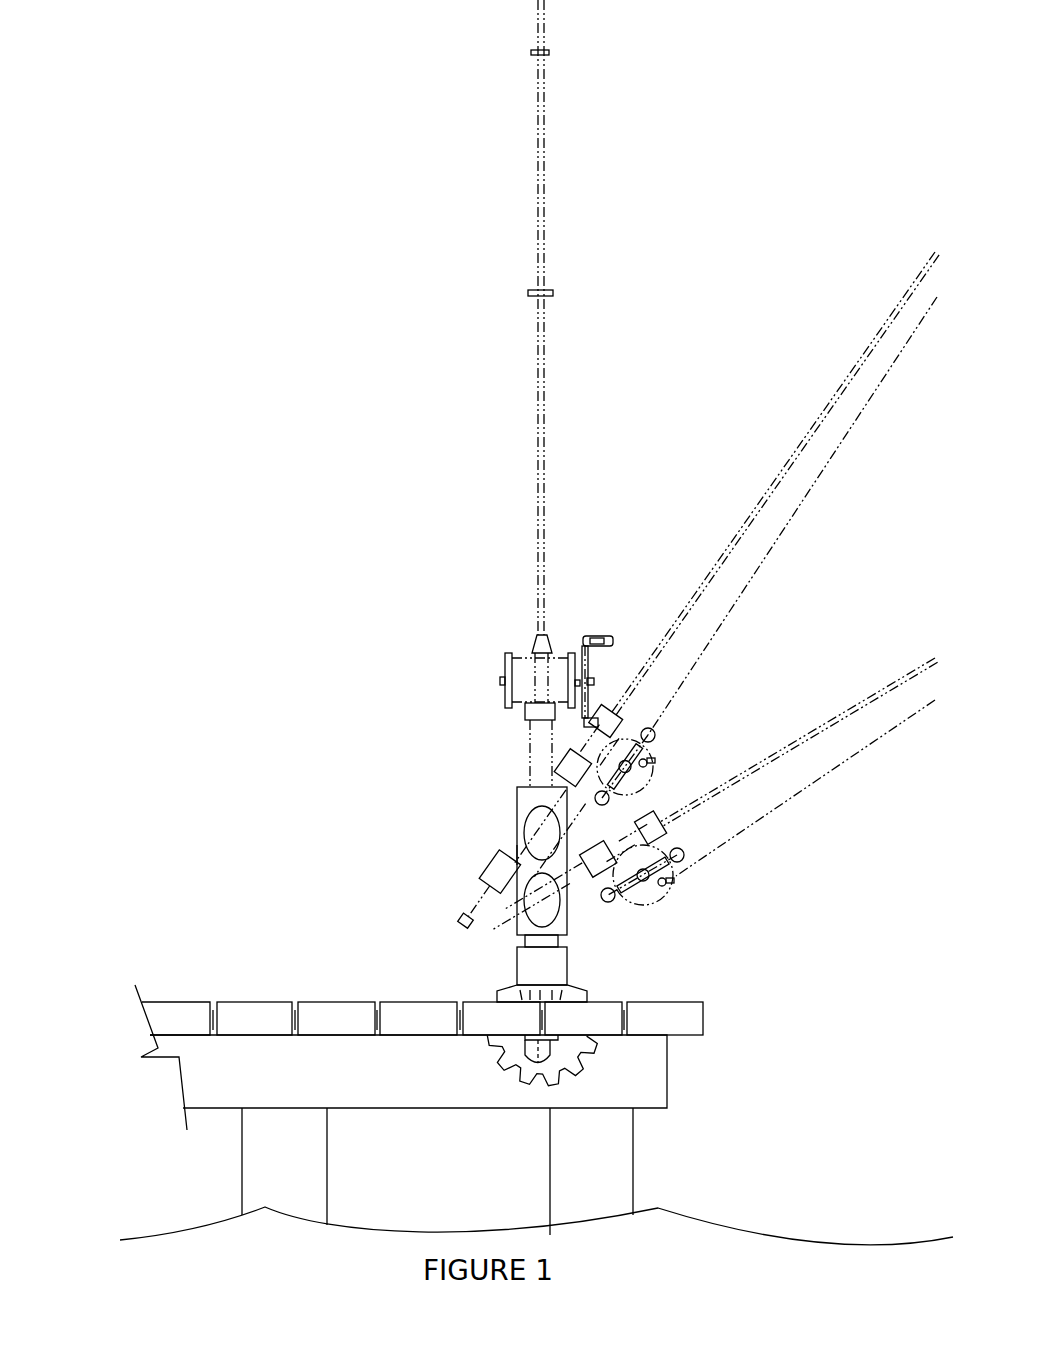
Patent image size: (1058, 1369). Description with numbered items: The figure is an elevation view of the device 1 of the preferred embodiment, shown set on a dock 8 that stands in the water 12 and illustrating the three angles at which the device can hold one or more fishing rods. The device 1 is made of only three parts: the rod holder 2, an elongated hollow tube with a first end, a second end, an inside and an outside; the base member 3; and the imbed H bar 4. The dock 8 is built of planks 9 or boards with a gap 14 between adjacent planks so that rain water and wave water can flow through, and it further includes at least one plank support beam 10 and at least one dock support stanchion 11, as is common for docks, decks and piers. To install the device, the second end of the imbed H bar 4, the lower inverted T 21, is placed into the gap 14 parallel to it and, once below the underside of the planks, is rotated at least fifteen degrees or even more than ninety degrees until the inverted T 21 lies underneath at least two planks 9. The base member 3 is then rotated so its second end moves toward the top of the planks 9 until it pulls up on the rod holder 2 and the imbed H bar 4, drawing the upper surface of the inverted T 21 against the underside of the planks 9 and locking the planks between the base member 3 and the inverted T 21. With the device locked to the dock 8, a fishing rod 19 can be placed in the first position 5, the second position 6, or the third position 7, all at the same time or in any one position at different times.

The device 1 is at (517, 802).
The rod holder 2 is at (517, 852).
The base member 3 is at (567, 960).
The imbed H bar 4 is at (523, 1048).
The first position 5 is at (782, 470).
The second position 6 is at (865, 698).
The third position 7 is at (538, 393).
The dock 8 is at (327, 1002).
The planks 9 is at (180, 1002).
The plank support beam 10 is at (660, 1110).
The dock support stanchion 11 is at (242, 1173).
The water 12 is at (743, 1232).
The gap 14 is at (213, 1037).
The fishing rod 19 is at (538, 482).
The lower inverted T 21 is at (540, 1072).